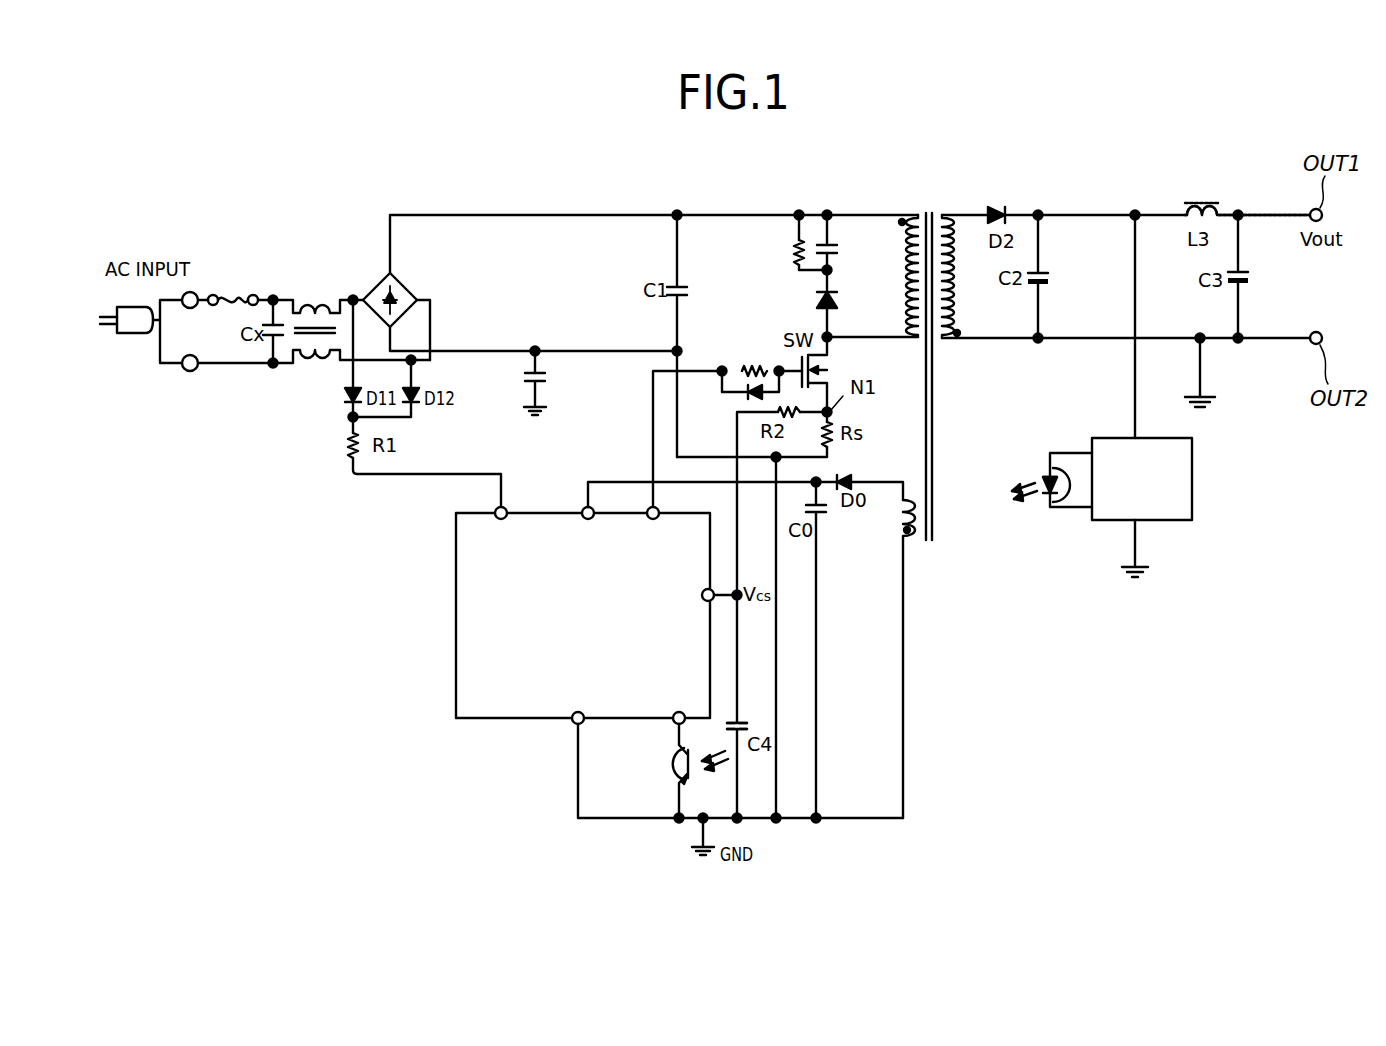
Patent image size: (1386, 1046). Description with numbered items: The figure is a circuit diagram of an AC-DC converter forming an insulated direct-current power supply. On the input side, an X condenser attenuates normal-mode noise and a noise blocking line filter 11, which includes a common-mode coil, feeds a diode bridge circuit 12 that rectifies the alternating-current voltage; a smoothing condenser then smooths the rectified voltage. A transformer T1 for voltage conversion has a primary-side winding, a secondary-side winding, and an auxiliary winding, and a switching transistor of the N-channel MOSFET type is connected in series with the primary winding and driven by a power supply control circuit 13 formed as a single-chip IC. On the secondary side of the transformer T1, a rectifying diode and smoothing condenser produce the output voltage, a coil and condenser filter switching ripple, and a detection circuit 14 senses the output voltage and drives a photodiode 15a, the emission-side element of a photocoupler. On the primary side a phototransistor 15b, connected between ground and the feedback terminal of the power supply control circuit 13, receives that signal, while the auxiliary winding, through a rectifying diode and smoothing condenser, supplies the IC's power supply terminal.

The noise blocking line filter 11 is at (308, 367).
The diode bridge circuit 12 is at (368, 270).
The power supply control circuit 13 is at (456, 634).
The detection circuit 14 is at (1194, 500).
The photodiode 15a is at (1040, 512).
The phototransistor 15b is at (672, 792).
The transformer T1 is at (930, 212).